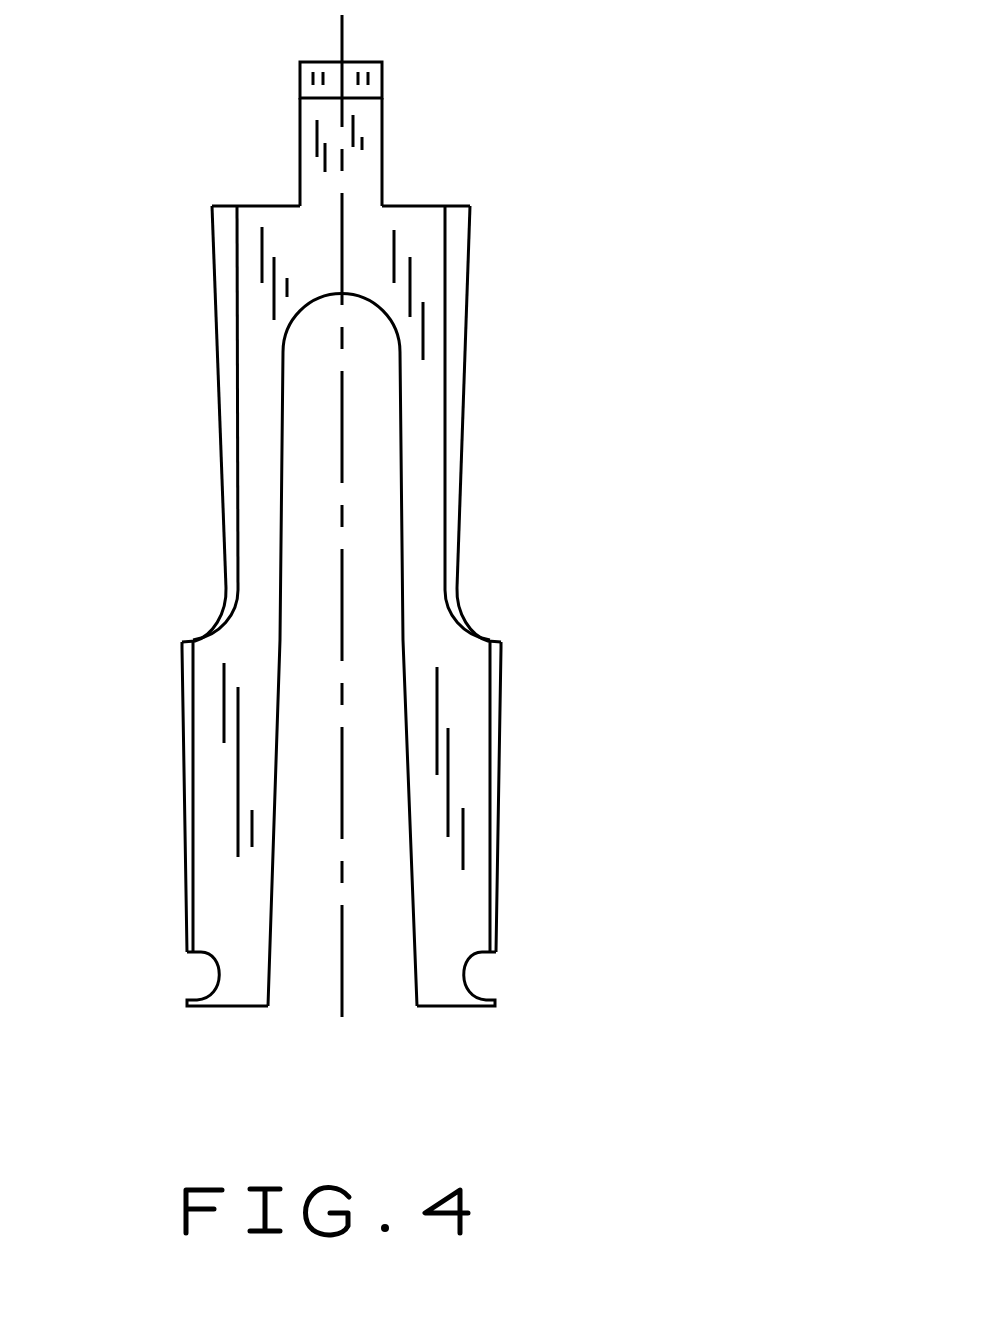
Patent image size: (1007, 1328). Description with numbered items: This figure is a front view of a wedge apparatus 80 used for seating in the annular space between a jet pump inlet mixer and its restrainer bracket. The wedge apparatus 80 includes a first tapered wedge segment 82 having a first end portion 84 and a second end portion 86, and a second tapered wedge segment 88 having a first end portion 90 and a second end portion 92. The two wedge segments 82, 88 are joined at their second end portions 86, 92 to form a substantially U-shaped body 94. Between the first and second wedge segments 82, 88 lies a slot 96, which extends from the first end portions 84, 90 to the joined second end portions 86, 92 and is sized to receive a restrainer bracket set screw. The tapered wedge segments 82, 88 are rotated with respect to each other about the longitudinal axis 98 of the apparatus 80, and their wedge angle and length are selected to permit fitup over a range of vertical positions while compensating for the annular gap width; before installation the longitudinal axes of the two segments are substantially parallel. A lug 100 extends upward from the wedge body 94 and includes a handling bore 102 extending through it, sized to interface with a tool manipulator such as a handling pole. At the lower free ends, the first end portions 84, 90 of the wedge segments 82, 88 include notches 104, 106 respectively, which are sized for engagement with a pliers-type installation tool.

The wedge apparatus 80 is at (586, 122).
The first tapered wedge segment 82 is at (225, 567).
The first end portion 84 is at (167, 948).
The second end portion 86 is at (198, 328).
The second tapered wedge segment 88 is at (458, 553).
The first end portion 90 is at (531, 913).
The second end portion 92 is at (483, 325).
The U-shaped body 94 is at (470, 243).
The slot 96 is at (303, 958).
The longitudinal axis 98 is at (343, 1044).
The lug 100 is at (383, 160).
The handling bore 102 is at (383, 85).
The notch 104 is at (213, 984).
The notch 106 is at (466, 994).